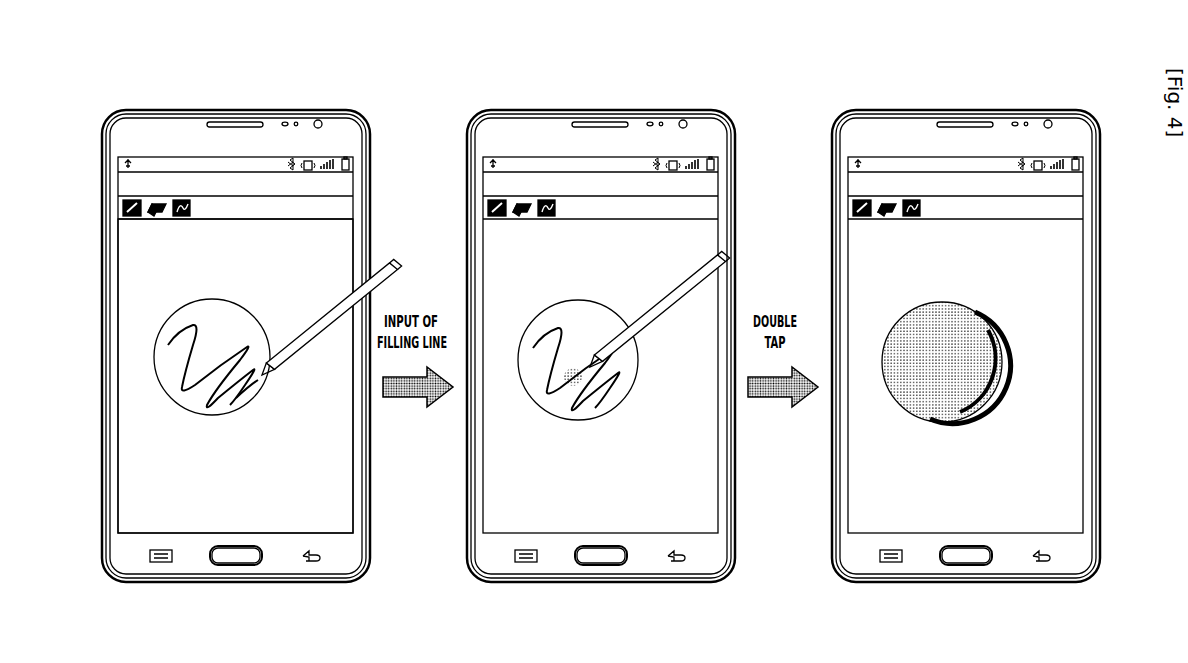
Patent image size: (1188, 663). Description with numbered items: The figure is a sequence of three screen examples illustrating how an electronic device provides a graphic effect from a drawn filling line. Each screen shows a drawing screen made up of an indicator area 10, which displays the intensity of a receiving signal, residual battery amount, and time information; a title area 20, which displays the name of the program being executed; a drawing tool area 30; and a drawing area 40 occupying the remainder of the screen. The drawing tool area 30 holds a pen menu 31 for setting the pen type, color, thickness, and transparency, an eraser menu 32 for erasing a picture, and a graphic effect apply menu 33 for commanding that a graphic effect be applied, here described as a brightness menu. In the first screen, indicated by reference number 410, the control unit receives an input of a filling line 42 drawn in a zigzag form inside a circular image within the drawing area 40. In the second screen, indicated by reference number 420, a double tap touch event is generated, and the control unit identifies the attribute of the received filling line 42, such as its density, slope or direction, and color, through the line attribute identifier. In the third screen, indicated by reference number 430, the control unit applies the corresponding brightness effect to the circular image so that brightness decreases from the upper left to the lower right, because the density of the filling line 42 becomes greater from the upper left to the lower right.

The indicator area 10 is at (102, 157).
The title area 20 is at (102, 173).
The drawing tool area 30 is at (102, 196).
The pen menu 31 is at (142, 216).
The eraser menu 32 is at (164, 216).
The graphic effect apply menu 33 is at (188, 216).
The drawing area 40 is at (102, 219).
The filling line 42 is at (573, 377).
The screen example of filling line input 410 is at (303, 109).
The screen example of double tap touch event 420 is at (599, 109).
The screen example of applied brightness effect 430 is at (964, 109).